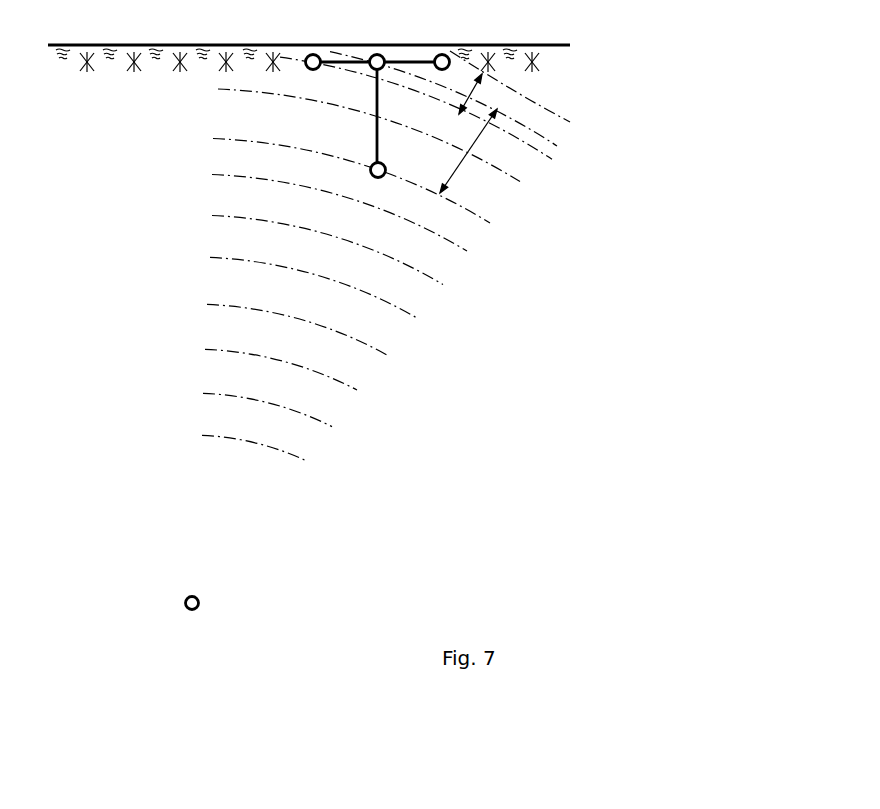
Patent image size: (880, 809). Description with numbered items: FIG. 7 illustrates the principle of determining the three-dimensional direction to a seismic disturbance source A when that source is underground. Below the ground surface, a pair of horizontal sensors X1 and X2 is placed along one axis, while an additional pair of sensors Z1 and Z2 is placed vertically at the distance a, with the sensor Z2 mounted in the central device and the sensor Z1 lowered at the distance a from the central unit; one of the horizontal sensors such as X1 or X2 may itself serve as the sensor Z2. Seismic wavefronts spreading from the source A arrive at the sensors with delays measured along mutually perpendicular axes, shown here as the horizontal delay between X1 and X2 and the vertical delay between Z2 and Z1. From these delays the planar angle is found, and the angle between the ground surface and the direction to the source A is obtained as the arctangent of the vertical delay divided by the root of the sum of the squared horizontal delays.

The sensor X1 is at (311, 73).
The sensor X2 is at (442, 48).
The sensor Z1 is at (363, 175).
The sensor Z2 is at (378, 48).
The seismic disturbance source A is at (181, 594).